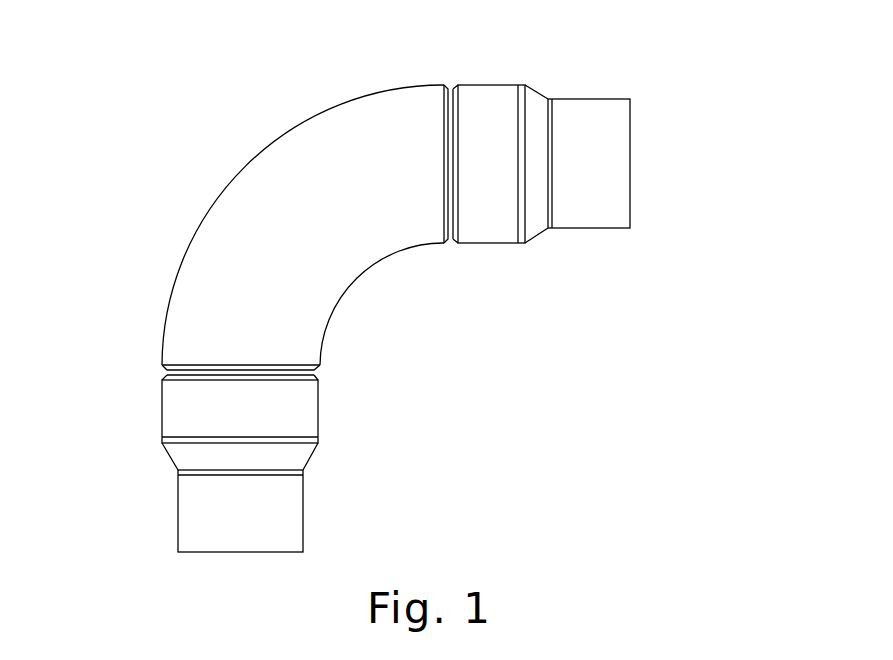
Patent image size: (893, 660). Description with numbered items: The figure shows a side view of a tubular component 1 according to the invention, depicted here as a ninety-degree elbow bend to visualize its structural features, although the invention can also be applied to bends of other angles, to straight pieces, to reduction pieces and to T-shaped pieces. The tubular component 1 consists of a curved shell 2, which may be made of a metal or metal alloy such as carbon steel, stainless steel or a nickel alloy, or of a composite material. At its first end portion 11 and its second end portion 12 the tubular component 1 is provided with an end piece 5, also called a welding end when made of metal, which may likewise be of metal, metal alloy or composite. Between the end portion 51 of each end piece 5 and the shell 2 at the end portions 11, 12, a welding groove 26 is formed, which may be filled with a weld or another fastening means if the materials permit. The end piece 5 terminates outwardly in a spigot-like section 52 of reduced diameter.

The tubular component 1 is at (186, 155).
The shell 2 is at (197, 235).
The first end portion 11 is at (402, 86).
The second end portion 12 is at (163, 329).
The welding groove 26 is at (450, 88).
The end piece 5 is at (537, 90).
The end portion of the end piece 51 is at (477, 83).
The spigot 52 is at (627, 99).